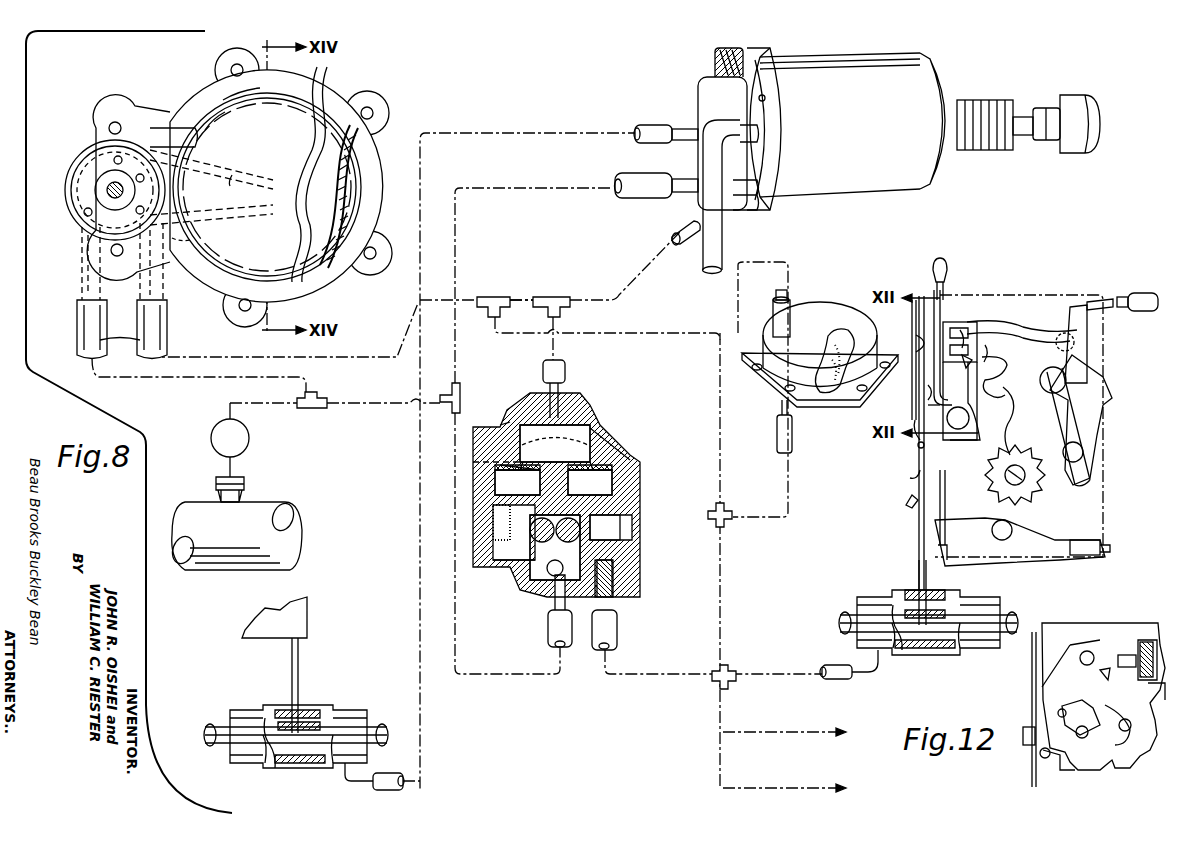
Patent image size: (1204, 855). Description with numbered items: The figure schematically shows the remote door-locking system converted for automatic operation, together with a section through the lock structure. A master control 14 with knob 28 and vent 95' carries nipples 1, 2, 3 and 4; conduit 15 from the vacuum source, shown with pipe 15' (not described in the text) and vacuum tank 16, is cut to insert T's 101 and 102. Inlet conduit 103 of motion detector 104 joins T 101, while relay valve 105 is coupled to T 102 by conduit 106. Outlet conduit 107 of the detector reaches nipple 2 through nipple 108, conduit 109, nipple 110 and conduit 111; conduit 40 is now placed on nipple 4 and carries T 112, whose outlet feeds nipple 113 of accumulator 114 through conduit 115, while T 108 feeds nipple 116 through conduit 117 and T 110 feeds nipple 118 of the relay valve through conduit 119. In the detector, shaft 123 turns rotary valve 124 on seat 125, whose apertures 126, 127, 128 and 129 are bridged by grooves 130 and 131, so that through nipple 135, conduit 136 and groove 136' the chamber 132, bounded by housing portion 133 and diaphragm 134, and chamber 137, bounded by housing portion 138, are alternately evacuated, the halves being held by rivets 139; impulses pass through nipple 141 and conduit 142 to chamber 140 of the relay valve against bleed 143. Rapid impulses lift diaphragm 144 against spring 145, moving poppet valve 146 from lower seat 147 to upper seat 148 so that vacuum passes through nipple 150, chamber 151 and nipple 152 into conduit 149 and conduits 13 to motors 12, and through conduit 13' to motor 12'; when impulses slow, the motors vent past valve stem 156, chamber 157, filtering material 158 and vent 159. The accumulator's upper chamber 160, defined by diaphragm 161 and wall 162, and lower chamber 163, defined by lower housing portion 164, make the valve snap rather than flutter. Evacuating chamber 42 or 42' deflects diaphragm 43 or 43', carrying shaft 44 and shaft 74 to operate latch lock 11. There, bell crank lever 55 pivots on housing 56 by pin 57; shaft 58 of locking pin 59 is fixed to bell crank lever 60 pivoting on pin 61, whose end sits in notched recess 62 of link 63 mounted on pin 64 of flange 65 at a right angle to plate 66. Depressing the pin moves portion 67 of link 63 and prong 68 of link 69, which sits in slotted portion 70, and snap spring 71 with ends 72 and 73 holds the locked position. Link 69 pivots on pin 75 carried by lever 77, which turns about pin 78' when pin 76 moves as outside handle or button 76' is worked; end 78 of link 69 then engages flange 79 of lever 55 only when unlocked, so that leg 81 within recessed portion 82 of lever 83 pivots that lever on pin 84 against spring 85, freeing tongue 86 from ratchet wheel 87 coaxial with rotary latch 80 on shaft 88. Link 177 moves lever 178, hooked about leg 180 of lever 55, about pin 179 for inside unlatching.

In FIG. 8, the nipple 1 is at (672, 178).
In FIG. 8, the nipple 2 is at (752, 205).
In FIG. 8, the nipple 3 is at (682, 125).
In FIG. 8, the nipple 4 is at (742, 125).
In FIG. 8, the latch lock 11 is at (305, 620).
In FIG. 8, the fluid pressure motor 12 is at (934, 618).
In FIG. 8, the fluid pressure motor 12' is at (296, 726).
In FIG. 8, the conduit 13 is at (800, 721).
In FIG. 8, the conduit 13' is at (388, 785).
In FIG. 8, the master control 14 is at (872, 50).
In FIG. 8, the conduit 15 is at (543, 461).
In FIG. 8, the conduit pipe 15' is at (235, 555).
In FIG. 8, the vacuum tank 16 is at (211, 440).
In FIG. 8, the knob 28 is at (1095, 98).
In FIG. 8, the conduit 40 is at (724, 238).
In FIG. 8, the chamber 42 is at (931, 645).
In FIG. 8, the chamber 42' is at (305, 754).
In FIG. 8, the diaphragm 43 is at (905, 642).
In FIG. 8, the diaphragm 43' is at (277, 758).
In FIG. 8, the motor shaft 44 is at (918, 562).
In FIG. 8, the bell crank lever 55 is at (965, 401).
In FIG. 12, the bell crank lever 55 is at (1165, 700).
In FIG. 8, the housing 56 is at (1042, 314).
In FIG. 8, the pin 57 is at (955, 432).
In FIG. 8, the shaft 58 is at (935, 300).
In FIG. 12, the shaft 58 is at (1030, 680).
In FIG. 8, the manual door locking and unlocking pin 59 is at (950, 268).
In FIG. 8, the bell crank lever 60 is at (932, 383).
In FIG. 12, the bell crank lever 60 is at (1028, 725).
In FIG. 8, the pin 61 is at (930, 400).
In FIG. 12, the pin 61 is at (1080, 740).
In FIG. 12, the notched recess 62 is at (1087, 710).
In FIG. 8, the link 63 is at (939, 347).
In FIG. 12, the link 63 is at (1100, 670).
In FIG. 8, the pin 64 is at (915, 340).
In FIG. 12, the pin 64 is at (1085, 665).
In FIG. 8, the flange 65 is at (920, 320).
In FIG. 12, the flange 65 is at (1103, 696).
In FIG. 8, the plate 66 is at (1105, 528).
In FIG. 8, the portion 67 is at (978, 322).
In FIG. 12, the portion 67 is at (1147, 620).
In FIG. 8, the prong 68 is at (968, 332).
In FIG. 12, the prong 68 is at (1118, 667).
In FIG. 8, the link 69 is at (1035, 353).
In FIG. 12, the link 69 is at (1153, 655).
In FIG. 8, the slotted portion 70 is at (945, 322).
In FIG. 12, the snap-acting spring 71 is at (1118, 735).
In FIG. 12, the spring end 72 is at (1105, 762).
In FIG. 12, the spring end 73 is at (1108, 700).
In FIG. 8, the shaft 74 is at (940, 475).
In FIG. 12, the shaft 74 is at (1030, 775).
In FIG. 8, the pivot pin 75 is at (1063, 340).
In FIG. 8, the pin 76 is at (1106, 288).
In FIG. 8, the outside door handle or button 76' is at (1141, 286).
In FIG. 8, the lever 77 is at (1081, 420).
In FIG. 8, the end 78 is at (997, 377).
In FIG. 8, the pin 78' is at (1090, 454).
In FIG. 8, the flange 79 is at (968, 350).
In FIG. 12, the flange 79 is at (1147, 690).
In FIG. 8, the rotary door latch 80 is at (1035, 485).
In FIG. 8, the leg 81 is at (968, 425).
In FIG. 8, the recessed portion 82 is at (1000, 418).
In FIG. 8, the lever 83 is at (1048, 386).
In FIG. 8, the pivot pin 84 is at (1050, 390).
In FIG. 8, the spring 85 is at (1058, 410).
In FIG. 8, the tongue 86 is at (1018, 455).
In FIG. 8, the ratchet wheel 87 is at (1005, 502).
In FIG. 8, the shaft 88 is at (1015, 475).
In FIG. 8, the vent 95' is at (788, 90).
In FIG. 8, the T 101 is at (316, 410).
In FIG. 8, the T 102 is at (462, 395).
In FIG. 8, the inlet conduit 103 is at (142, 380).
In FIG. 8, the motion detector 104 is at (332, 86).
In FIG. 8, the relay valve 105 is at (635, 498).
In FIG. 8, the conduit 106 is at (458, 630).
In FIG. 8, the outlet conduit 107 is at (185, 357).
In FIG. 8, the nipple 108 is at (490, 292).
In FIG. 8, the conduit 109 is at (523, 298).
In FIG. 8, the nipple 110 is at (548, 298).
In FIG. 8, the conduit 111 is at (634, 282).
In FIG. 8, the T 112 is at (712, 520).
In FIG. 8, the nipple 113 is at (778, 420).
In FIG. 8, the accumulator 114 is at (813, 312).
In FIG. 8, the conduit 115 is at (795, 487).
In FIG. 8, the nipple 116 is at (775, 318).
In FIG. 8, the conduit 117 is at (648, 335).
In FIG. 8, the nipple 118 is at (568, 375).
In FIG. 8, the conduit 119 is at (545, 352).
In FIG. 8, the shaft 123 is at (108, 180).
In FIG. 8, the rotary valve 124 is at (112, 183).
In FIG. 8, the valve seat 125 is at (88, 212).
In FIG. 8, the aperture 126 is at (132, 125).
In FIG. 8, the aperture 127 is at (72, 176).
In FIG. 8, the aperture 128 is at (132, 268).
In FIG. 8, the aperture 129 is at (180, 190).
In FIG. 8, the groove 130 is at (70, 152).
In FIG. 8, the groove 131 is at (182, 210).
In FIG. 8, the chamber 132 is at (316, 80).
In FIG. 8, the housing portion 133 is at (223, 100).
In FIG. 8, the flexible diaphragm 134 is at (393, 140).
In FIG. 8, the nipple 135 is at (78, 280).
In FIG. 8, the conduit 136 is at (267, 187).
In FIG. 8, the groove 136' is at (247, 156).
In FIG. 8, the chamber 137 is at (355, 190).
In FIG. 8, the housing portion 138 is at (322, 272).
In FIG. 8, the rivets 139 is at (375, 250).
In FIG. 8, the chamber 140 is at (577, 446).
In FIG. 8, the nipple 141 is at (158, 289).
In FIG. 8, the conduit 142 is at (172, 238).
In FIG. 8, the vent 143 is at (507, 418).
In FIG. 8, the diaphragm 144 is at (522, 462).
In FIG. 8, the spring 145 is at (607, 436).
In FIG. 8, the poppet valve 146 is at (575, 530).
In FIG. 8, the lower seat 147 is at (520, 565).
In FIG. 8, the upper seat 148 is at (575, 500).
In FIG. 8, the conduit 149 is at (662, 680).
In FIG. 8, the nipple 150 is at (552, 605).
In FIG. 8, the relay valve chamber 151 is at (625, 530).
In FIG. 8, the nipple 152 is at (618, 600).
In FIG. 8, the valve stem 156 is at (540, 488).
In FIG. 8, the valve chamber 157 is at (478, 490).
In FIG. 8, the filtering material 158 is at (480, 532).
In FIG. 8, the vent 159 is at (505, 565).
In FIG. 8, the upper chamber 160 is at (828, 336).
In FIG. 8, the flexible diaphragm 161 is at (838, 390).
In FIG. 8, the wall 162 is at (838, 305).
In FIG. 8, the lower chamber 163 is at (845, 385).
In FIG. 8, the lower housing portion 164 is at (815, 412).
In FIG. 8, the link 177 is at (908, 500).
In FIG. 8, the lever 178 is at (915, 472).
In FIG. 8, the pin 179 is at (915, 448).
In FIG. 8, the leg 180 is at (915, 420).